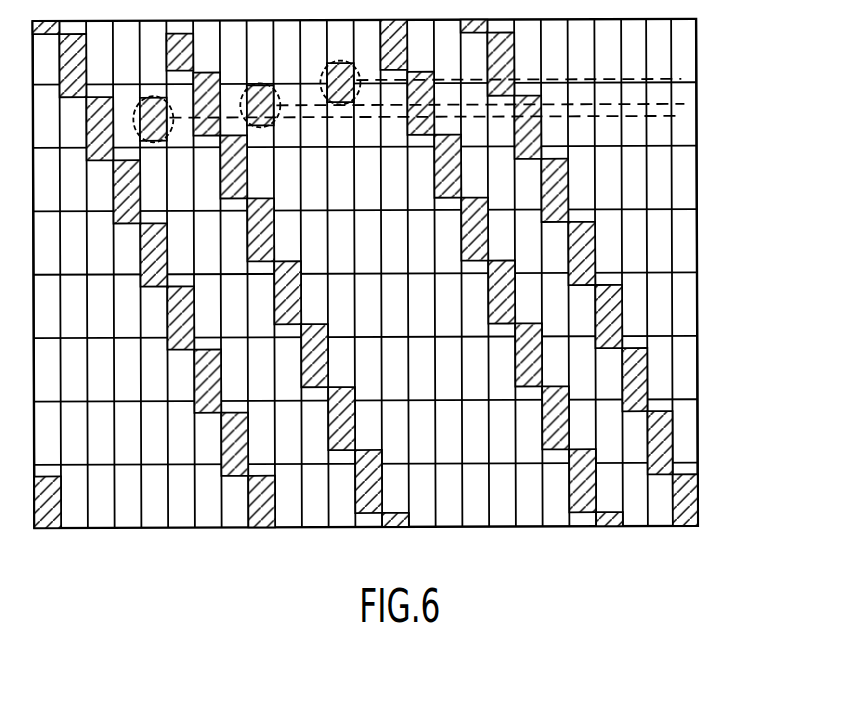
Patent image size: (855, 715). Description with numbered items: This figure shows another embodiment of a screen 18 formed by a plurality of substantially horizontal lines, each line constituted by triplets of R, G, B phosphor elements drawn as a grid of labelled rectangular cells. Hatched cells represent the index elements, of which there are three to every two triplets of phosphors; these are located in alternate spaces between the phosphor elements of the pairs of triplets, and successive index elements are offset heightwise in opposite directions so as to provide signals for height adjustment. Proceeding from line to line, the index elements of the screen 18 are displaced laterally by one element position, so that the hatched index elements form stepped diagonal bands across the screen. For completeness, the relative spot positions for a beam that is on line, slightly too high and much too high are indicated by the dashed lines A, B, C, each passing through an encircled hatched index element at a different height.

The screen 18 is at (114, 530).
The scanning line A is at (681, 117).
The scanning line B is at (683, 105).
The scanning line C is at (680, 80).